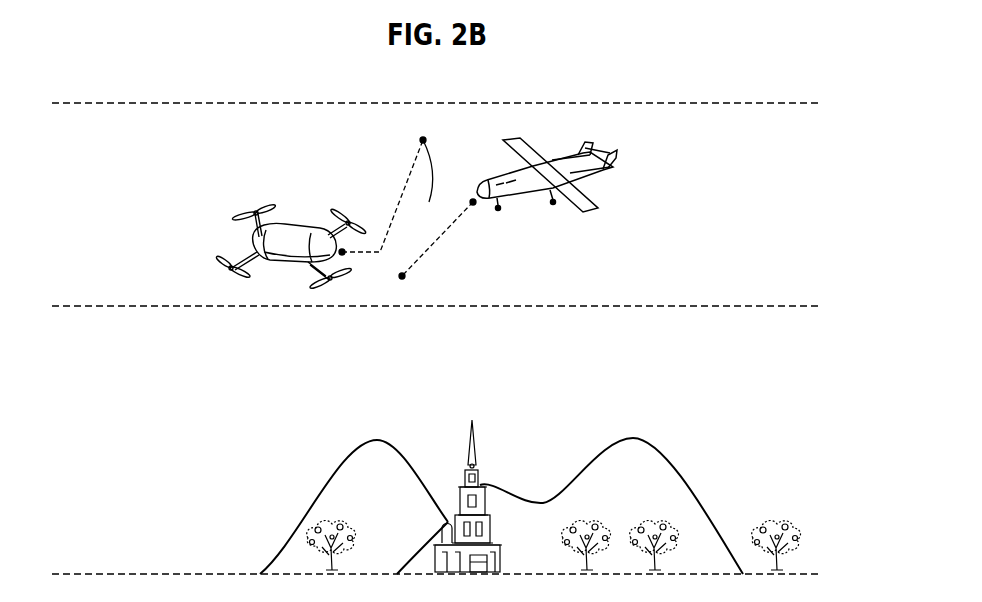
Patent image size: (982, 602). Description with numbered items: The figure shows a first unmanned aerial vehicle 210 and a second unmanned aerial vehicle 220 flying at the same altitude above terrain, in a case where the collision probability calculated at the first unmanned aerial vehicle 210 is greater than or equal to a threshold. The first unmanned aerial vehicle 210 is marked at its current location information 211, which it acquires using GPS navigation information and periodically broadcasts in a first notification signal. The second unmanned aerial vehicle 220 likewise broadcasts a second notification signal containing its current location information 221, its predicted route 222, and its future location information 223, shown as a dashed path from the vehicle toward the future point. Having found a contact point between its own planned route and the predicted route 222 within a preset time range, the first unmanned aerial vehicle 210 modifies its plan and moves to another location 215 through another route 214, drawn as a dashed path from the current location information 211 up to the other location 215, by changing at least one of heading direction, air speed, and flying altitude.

The first unmanned aerial vehicle 210 is at (287, 232).
The current location information 211 is at (342, 249).
The other route 214 is at (347, 255).
The other location 215 is at (423, 140).
The second unmanned aerial vehicle 220 is at (593, 198).
The current location information 221 is at (473, 202).
The predicted route 222 is at (473, 203).
The future location information 223 is at (402, 276).